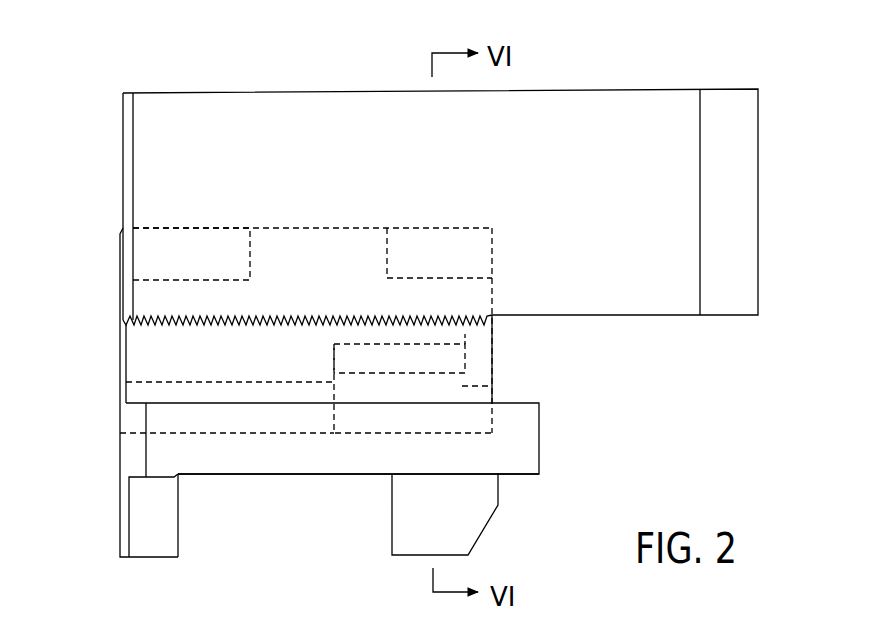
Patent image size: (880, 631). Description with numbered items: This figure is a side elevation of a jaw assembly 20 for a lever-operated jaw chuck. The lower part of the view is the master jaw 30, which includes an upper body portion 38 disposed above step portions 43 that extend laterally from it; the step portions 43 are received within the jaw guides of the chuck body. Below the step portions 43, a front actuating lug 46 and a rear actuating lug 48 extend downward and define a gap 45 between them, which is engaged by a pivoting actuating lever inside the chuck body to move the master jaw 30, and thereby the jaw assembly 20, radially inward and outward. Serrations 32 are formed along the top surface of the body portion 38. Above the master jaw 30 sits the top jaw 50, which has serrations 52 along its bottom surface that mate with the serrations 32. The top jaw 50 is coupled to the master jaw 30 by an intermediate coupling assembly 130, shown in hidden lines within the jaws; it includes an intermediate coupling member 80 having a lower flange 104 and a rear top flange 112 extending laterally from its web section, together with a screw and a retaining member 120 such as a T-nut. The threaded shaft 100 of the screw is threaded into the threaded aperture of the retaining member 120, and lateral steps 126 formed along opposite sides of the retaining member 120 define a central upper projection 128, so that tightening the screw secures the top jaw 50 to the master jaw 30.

The jaw assembly 20 is at (128, 56).
The master jaw 30 is at (550, 420).
The serrations 32 is at (465, 332).
The upper body portion 38 is at (152, 372).
The step portions 43 is at (528, 452).
The gap 45 is at (293, 535).
The front actuating lug 46 is at (465, 537).
The rear actuating lug 48 is at (155, 543).
The top jaw 50 is at (712, 83).
The serrations 52 is at (160, 327).
The intermediate coupling member 80 is at (339, 224).
The threaded shaft 100 is at (455, 235).
The lower flange 104 is at (133, 418).
The rear top flange 112 is at (178, 245).
The retaining member 120 is at (468, 334).
The lateral steps 126 is at (492, 386).
The central upper projection 128 is at (455, 358).
The intermediate coupling assembly 130 is at (116, 300).